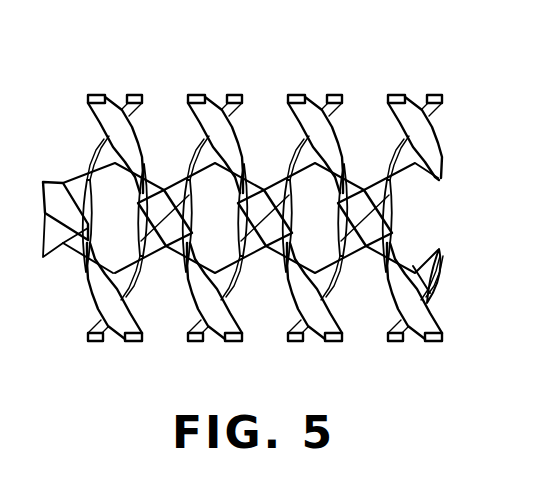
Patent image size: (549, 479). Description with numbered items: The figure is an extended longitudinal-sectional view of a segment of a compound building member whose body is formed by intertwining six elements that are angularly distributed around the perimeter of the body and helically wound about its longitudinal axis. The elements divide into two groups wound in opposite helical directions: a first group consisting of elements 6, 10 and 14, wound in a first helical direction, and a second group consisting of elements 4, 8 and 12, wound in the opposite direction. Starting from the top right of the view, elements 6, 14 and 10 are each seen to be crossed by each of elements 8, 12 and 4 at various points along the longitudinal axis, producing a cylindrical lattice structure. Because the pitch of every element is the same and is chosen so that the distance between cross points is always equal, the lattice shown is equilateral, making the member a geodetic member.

The element 4 is at (192, 105).
The element 6 is at (138, 107).
The element 8 is at (92, 105).
The element 10 is at (237, 107).
The element 12 is at (292, 105).
The element 14 is at (338, 107).